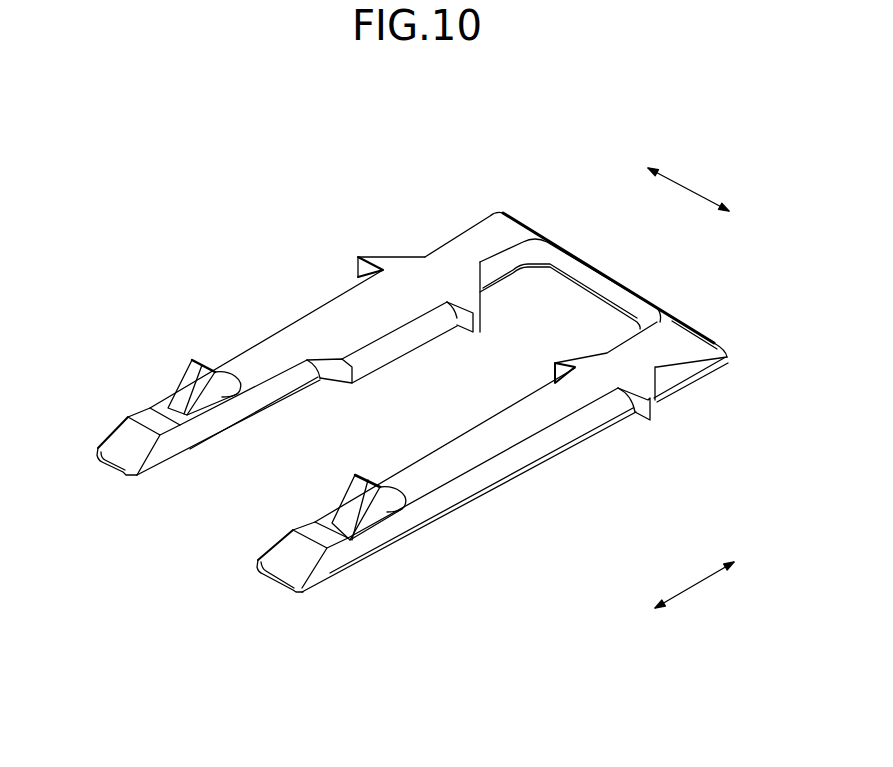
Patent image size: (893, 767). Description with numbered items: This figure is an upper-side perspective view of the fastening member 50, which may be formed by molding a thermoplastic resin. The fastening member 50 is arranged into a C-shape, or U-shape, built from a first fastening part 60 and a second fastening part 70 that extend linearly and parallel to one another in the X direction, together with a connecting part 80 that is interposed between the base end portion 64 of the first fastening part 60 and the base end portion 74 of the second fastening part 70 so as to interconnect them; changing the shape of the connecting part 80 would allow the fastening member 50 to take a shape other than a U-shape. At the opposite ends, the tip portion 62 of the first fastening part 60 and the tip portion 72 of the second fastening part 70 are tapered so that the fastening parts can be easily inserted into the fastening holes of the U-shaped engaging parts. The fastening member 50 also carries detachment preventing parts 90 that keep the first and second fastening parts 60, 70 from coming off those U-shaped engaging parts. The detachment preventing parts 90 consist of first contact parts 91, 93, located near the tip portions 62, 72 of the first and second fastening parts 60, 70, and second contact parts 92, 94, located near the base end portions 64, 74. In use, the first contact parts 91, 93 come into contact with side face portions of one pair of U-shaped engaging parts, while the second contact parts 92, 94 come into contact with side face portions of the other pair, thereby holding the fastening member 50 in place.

The fastening member 50 is at (516, 200).
The first fastening part 60 is at (302, 385).
The tip portion 62 is at (117, 446).
The base end portion 64 is at (485, 230).
The second fastening part 70 is at (476, 428).
The tip portion 72 is at (283, 557).
The base end portion 74 is at (667, 343).
The connecting part 80 is at (632, 278).
The detachment preventing parts 90 is at (200, 248).
The first contact part 91 is at (193, 378).
The second contact part 92 is at (373, 254).
The first contact part 93 is at (371, 508).
The second contact part 94 is at (637, 393).